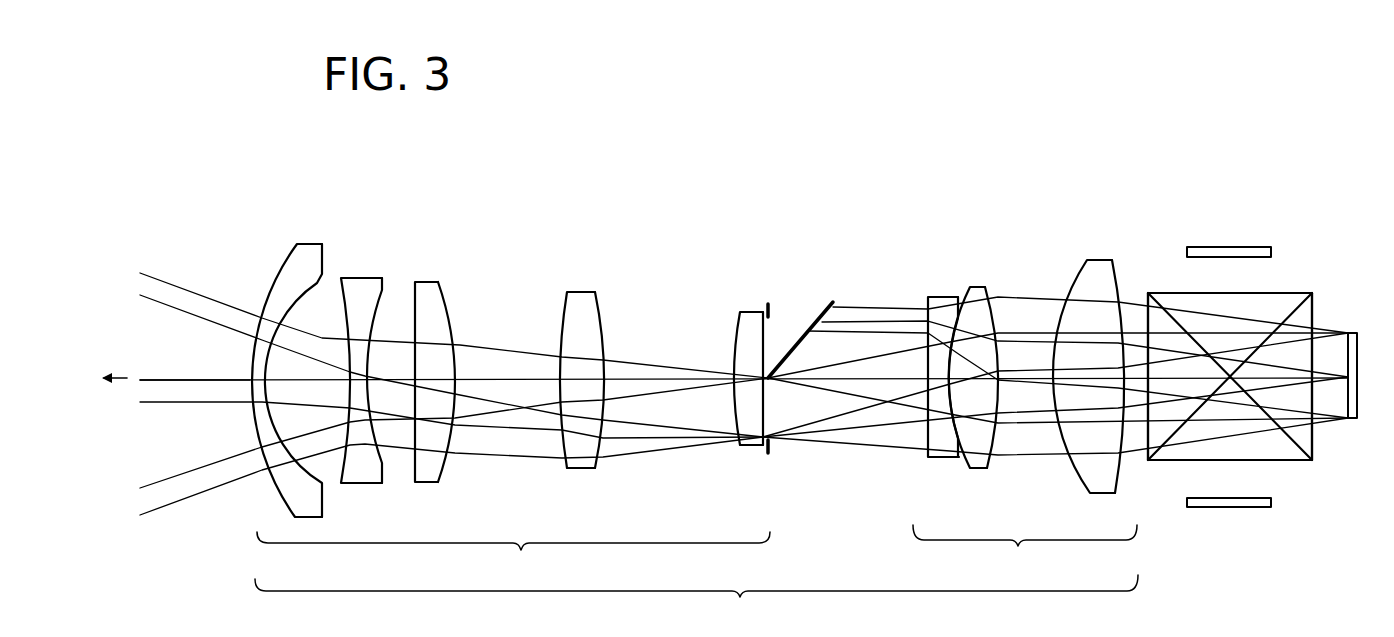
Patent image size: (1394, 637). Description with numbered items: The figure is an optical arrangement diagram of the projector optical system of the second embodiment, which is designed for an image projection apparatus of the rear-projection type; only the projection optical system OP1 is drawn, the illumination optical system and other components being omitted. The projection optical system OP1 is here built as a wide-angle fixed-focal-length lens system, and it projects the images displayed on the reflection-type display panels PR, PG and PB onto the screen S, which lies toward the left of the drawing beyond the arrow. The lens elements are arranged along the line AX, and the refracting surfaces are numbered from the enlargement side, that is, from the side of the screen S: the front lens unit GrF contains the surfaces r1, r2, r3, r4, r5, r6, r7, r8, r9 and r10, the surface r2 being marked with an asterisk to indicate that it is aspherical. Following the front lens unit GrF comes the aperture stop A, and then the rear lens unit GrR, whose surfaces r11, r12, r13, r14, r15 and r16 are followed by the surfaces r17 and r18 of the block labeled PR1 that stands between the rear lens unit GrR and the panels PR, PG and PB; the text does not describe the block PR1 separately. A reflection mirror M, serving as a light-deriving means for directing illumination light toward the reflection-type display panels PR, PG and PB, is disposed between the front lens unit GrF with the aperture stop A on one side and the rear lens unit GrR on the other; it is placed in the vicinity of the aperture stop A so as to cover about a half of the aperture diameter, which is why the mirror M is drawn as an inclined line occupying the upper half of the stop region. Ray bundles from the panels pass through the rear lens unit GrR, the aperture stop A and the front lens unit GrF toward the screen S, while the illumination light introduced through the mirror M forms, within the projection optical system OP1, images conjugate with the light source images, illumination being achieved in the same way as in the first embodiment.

The screen S is at (95, 388).
The optical axis AX is at (150, 378).
The first surface r1 is at (283, 263).
The second surface r2 is at (317, 284).
The third surface r3 is at (339, 280).
The fourth surface r4 is at (383, 290).
The fifth surface r5 is at (417, 283).
The sixth surface r6 is at (440, 290).
The seventh surface r7 is at (565, 302).
The eighth surface r8 is at (598, 302).
The ninth surface r9 is at (735, 330).
The tenth surface r10 is at (760, 313).
The aperture stop A is at (768, 305).
The reflection mirror M is at (828, 302).
The eleventh surface r11 is at (927, 298).
The twelfth surface r12 is at (953, 310).
The thirteenth surface r13 is at (966, 287).
The fourteenth surface r14 is at (986, 287).
The fifteenth surface r15 is at (1085, 262).
The sixteenth surface r16 is at (1121, 268).
The seventeenth surface r17 is at (1147, 293).
The eighteenth surface r18 is at (1314, 293).
The cross dichroic prism PR1 is at (1302, 460).
The reflection-type display panel PR is at (1237, 247).
The reflection-type display panel PB is at (1243, 508).
The reflection-type display panel PG is at (1352, 333).
The front lens unit GrF is at (513, 558).
The rear lens unit GrR is at (1025, 554).
The projection optical system OP1 is at (696, 604).